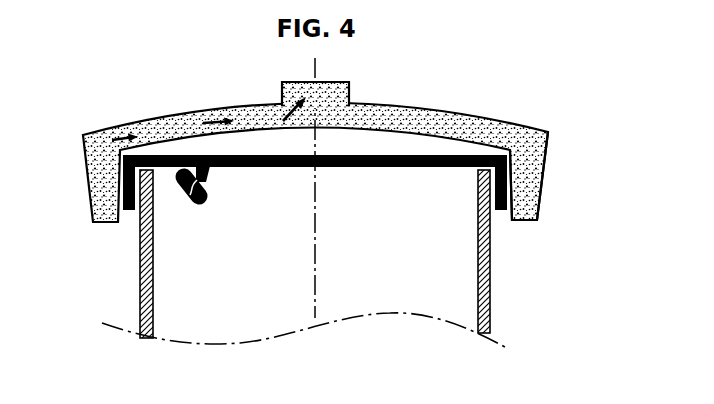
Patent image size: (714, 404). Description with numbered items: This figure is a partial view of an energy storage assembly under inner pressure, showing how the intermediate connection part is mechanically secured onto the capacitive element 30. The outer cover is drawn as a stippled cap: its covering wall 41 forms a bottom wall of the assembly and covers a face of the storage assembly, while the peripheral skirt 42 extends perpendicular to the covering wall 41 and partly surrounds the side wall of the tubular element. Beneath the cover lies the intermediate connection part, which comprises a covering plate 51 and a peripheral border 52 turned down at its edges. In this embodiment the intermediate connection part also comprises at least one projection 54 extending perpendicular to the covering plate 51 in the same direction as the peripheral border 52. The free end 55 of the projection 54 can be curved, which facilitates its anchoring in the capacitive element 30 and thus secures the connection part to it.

The capacitive element 30 is at (367, 253).
The covering wall 41 is at (442, 118).
The peripheral skirt 42 is at (527, 178).
The covering plate 51 is at (388, 167).
The peripheral border 52 is at (505, 193).
The projection 54 is at (207, 177).
The free end 55 is at (190, 196).